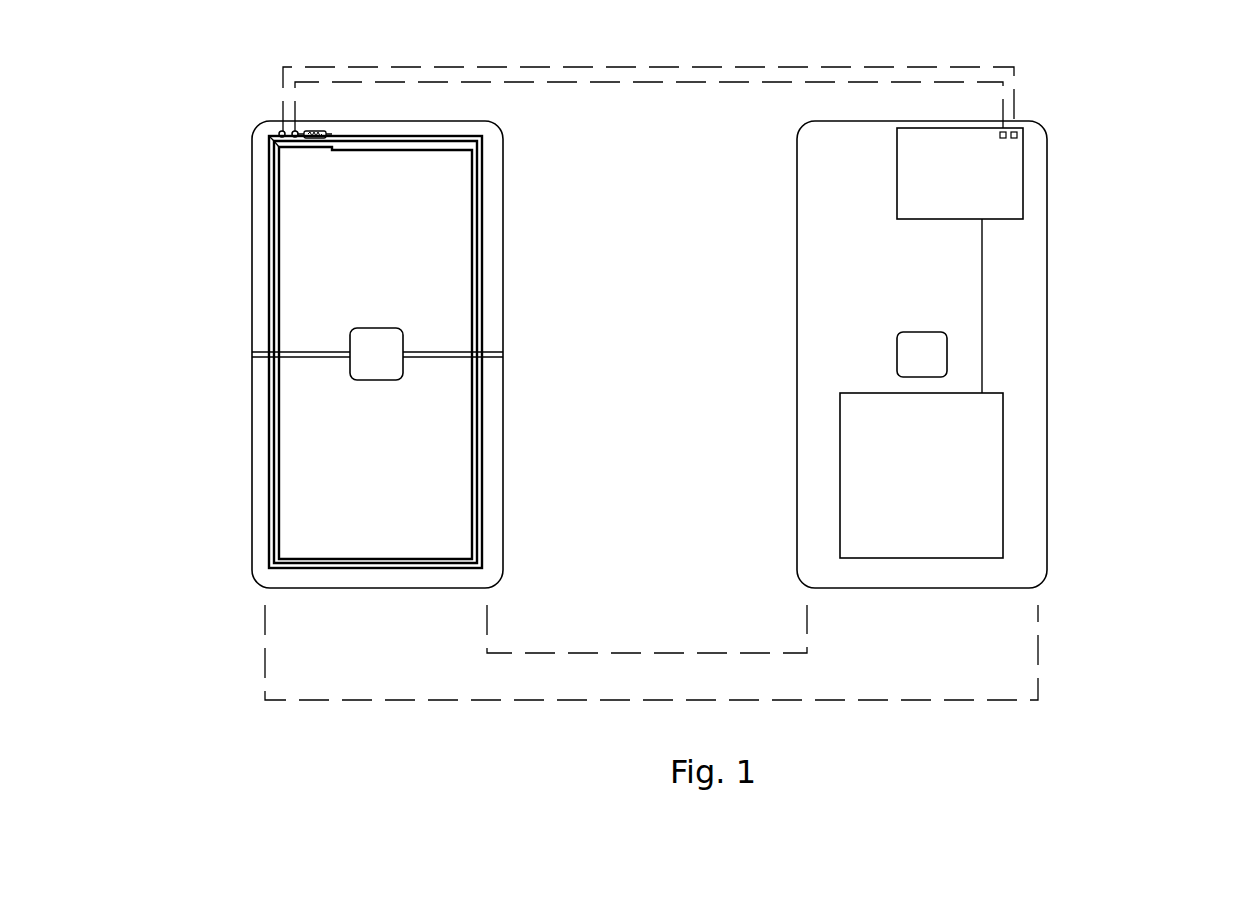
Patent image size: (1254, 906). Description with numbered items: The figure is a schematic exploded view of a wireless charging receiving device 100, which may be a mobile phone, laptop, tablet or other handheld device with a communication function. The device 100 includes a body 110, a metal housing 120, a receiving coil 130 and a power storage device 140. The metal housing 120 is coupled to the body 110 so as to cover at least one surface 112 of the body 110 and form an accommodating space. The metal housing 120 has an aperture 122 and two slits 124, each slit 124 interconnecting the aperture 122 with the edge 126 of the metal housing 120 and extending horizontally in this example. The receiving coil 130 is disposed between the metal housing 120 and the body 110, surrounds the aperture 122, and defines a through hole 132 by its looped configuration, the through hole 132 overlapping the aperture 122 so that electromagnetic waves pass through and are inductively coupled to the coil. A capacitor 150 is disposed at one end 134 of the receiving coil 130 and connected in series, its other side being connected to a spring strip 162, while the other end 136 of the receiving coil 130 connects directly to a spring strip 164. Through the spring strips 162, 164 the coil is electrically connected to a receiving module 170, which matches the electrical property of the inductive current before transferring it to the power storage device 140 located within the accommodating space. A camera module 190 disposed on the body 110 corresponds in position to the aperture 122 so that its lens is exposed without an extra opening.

The wireless charging receiving device 100 is at (664, 366).
The body 110 is at (1033, 300).
The surface 112 is at (1047, 236).
The metal housing 120 is at (262, 313).
The aperture 122 is at (377, 366).
The slit 124 is at (305, 362).
The edge 126 is at (242, 527).
The receiving coil 130 is at (281, 150).
The through hole 132 is at (267, 255).
The end 134 is at (315, 129).
The other end 136 is at (270, 139).
The capacitor 150 is at (276, 143).
The spring strip 162 is at (281, 131).
The spring strip 164 is at (294, 131).
The receiving module 170 is at (1003, 167).
The camera module 190 is at (922, 357).
The power storage device 140 is at (972, 462).